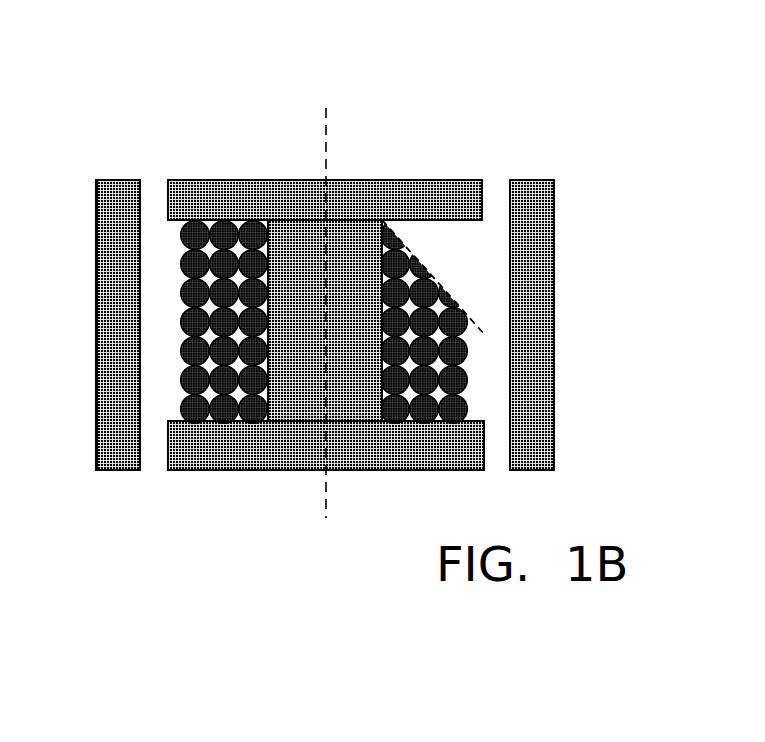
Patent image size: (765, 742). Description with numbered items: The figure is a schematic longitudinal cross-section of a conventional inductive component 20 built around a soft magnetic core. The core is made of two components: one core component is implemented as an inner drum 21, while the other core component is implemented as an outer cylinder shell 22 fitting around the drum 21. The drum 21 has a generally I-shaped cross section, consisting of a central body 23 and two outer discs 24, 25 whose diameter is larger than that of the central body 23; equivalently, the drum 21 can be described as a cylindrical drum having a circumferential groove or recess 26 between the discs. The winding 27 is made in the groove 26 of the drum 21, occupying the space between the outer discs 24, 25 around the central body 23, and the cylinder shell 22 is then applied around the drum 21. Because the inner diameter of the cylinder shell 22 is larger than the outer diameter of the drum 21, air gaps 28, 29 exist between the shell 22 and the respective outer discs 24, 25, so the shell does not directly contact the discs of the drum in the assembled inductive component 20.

The inductive component 20 is at (100, 75).
The core component implemented as inner drum 21 is at (219, 465).
The core component implemented as outer cylinder shell 22 is at (110, 465).
The central body 23 is at (341, 283).
The outer disc 24 is at (450, 186).
The outer disc 25 is at (409, 442).
The circumferential groove 26 is at (447, 257).
The winding 27 is at (447, 343).
The air gap 28 is at (145, 175).
The air gap 29 is at (483, 440).